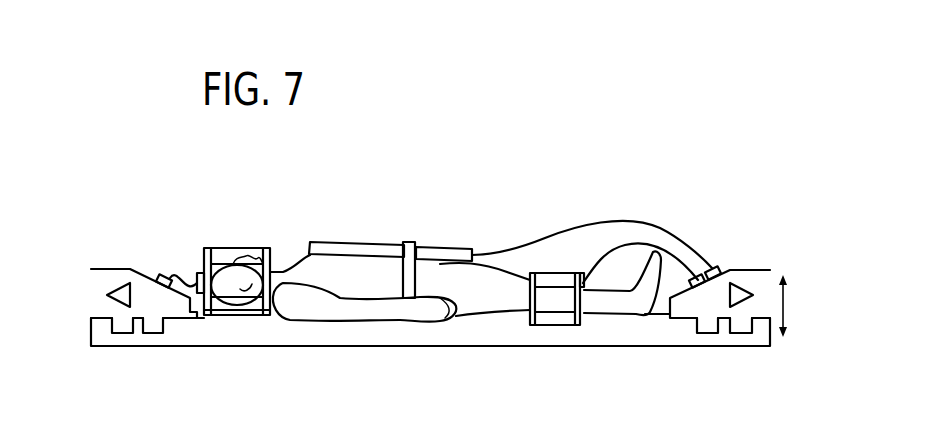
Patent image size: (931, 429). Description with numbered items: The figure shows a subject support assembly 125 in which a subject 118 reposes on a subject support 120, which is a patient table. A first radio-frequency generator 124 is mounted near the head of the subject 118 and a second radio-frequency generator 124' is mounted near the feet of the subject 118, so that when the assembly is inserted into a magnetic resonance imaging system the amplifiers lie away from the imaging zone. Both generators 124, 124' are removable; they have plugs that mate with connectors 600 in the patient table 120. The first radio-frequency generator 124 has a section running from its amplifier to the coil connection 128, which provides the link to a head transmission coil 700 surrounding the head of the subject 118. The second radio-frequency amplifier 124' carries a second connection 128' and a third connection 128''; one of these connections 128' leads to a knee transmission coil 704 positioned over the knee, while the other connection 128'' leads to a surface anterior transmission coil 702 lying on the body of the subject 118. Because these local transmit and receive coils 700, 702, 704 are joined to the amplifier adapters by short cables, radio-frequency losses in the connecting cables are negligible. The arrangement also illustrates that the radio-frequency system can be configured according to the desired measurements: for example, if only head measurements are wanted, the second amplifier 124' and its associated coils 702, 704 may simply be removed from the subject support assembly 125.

The subject support assembly 125 is at (490, 166).
The first radio-frequency generator 124 is at (142, 263).
The second radio-frequency generator 124' is at (731, 276).
The coil connection 128 is at (170, 244).
The second connection 128' is at (592, 231).
The third connection 128'' is at (717, 237).
The head transmission coil 700 is at (238, 247).
The surface anterior transmission coil 702 is at (344, 242).
The knee transmission coil 704 is at (558, 272).
The subject 118 is at (480, 297).
The subject support 120 is at (622, 337).
The connectors 600 is at (122, 335).